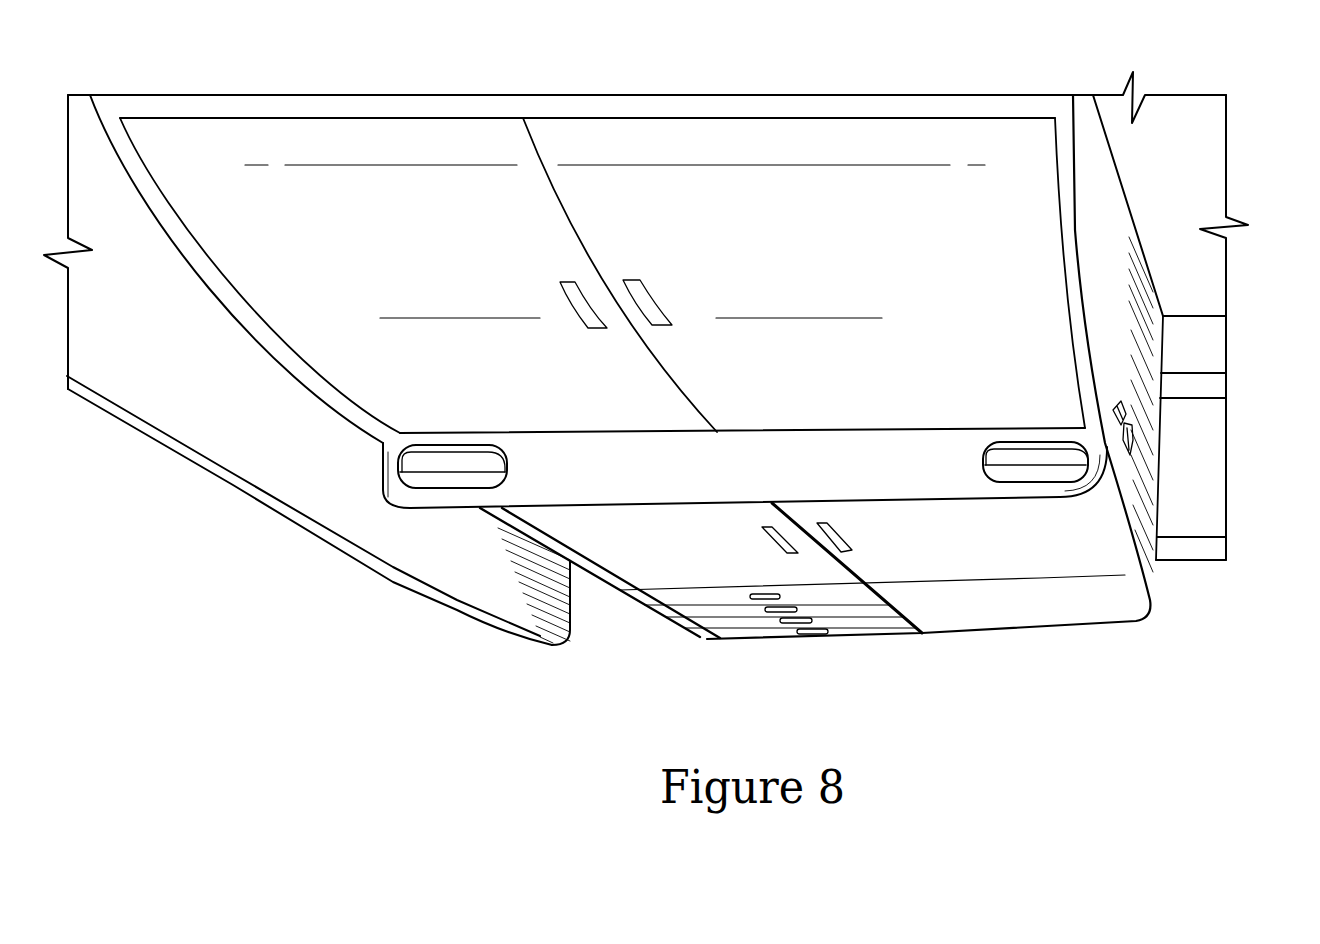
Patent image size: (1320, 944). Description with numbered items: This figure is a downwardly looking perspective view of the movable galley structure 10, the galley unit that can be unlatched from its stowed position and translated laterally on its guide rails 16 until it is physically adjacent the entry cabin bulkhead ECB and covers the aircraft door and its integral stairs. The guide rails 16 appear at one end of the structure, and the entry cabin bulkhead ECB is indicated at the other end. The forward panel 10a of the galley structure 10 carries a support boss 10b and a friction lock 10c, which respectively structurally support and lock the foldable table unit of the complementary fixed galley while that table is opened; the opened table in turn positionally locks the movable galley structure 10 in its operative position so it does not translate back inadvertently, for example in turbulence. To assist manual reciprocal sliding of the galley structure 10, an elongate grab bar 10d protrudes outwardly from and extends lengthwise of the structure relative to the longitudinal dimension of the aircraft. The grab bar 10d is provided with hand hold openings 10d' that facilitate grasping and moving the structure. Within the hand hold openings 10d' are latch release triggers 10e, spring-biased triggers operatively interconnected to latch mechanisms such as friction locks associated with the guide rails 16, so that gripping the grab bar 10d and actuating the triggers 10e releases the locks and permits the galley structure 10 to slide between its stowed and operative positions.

The movable galley structure 10 is at (480, 200).
The forward panel 10a is at (1105, 192).
The support boss 10b is at (1133, 433).
The friction lock 10c is at (1119, 398).
The grab bar 10d is at (745, 425).
The hand hold openings 10d' is at (743, 429).
The latch release triggers 10e is at (433, 480).
The guide rails 16 is at (1203, 383).
The entry cabin bulkhead ECB is at (215, 373).